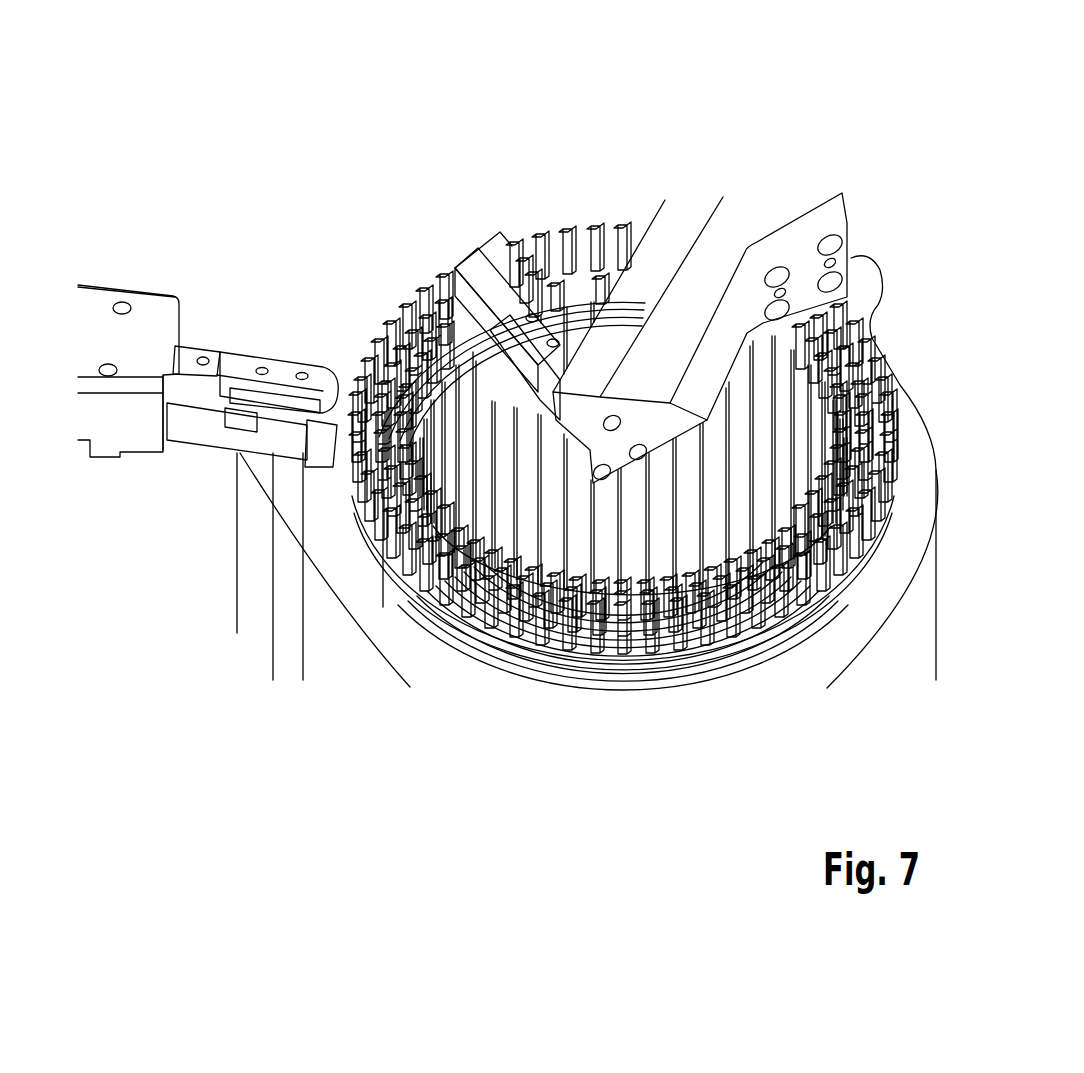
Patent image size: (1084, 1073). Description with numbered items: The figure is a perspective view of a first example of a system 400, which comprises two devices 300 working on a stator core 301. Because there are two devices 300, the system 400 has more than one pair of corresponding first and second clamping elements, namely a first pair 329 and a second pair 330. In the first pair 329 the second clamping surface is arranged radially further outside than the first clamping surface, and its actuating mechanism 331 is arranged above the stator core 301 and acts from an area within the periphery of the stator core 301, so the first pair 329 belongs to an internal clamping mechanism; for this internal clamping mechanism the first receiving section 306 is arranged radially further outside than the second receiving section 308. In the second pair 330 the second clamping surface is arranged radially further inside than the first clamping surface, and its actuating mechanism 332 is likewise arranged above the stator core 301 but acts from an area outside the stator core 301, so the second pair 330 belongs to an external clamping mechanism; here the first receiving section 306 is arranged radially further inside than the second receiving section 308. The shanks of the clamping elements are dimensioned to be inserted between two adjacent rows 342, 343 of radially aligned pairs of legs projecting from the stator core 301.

The system 400 is at (283, 83).
The device 300 is at (135, 261).
The stator core 301 is at (790, 415).
The first pair of clamping elements 329 is at (511, 164).
The actuating mechanism 331 is at (570, 301).
The first receiving section 306 is at (468, 243).
The second receiving section 308 is at (497, 240).
The actuating mechanism 332 is at (189, 301).
The second pair of clamping elements 330 is at (313, 466).
The row of radially aligned pairs of legs 342 is at (430, 267).
The row of radially aligned pairs of legs 343 is at (458, 241).